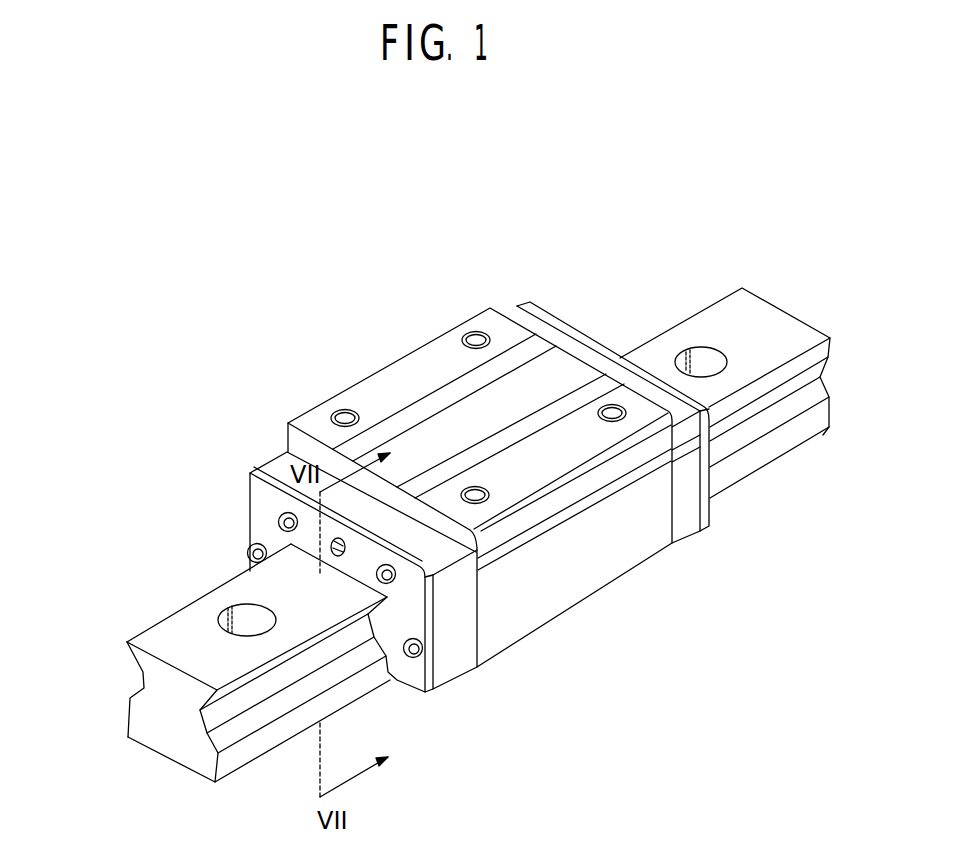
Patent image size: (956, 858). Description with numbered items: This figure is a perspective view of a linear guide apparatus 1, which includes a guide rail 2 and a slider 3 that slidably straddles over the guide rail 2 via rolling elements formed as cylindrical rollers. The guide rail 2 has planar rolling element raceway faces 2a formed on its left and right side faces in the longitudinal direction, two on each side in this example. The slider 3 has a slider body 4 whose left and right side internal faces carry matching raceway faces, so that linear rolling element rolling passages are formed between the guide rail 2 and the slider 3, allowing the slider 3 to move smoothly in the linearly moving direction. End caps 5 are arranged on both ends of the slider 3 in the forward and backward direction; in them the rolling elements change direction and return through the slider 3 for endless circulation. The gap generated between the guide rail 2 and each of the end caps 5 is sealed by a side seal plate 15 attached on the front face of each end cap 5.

The linear guide apparatus 1 is at (297, 353).
The guide rail 2 is at (750, 322).
The rolling element raceway faces 2a is at (127, 656).
The slider 3 is at (633, 576).
The slider body 4 is at (553, 605).
The end caps 5 is at (688, 523).
The side seal plate 15 is at (575, 333).